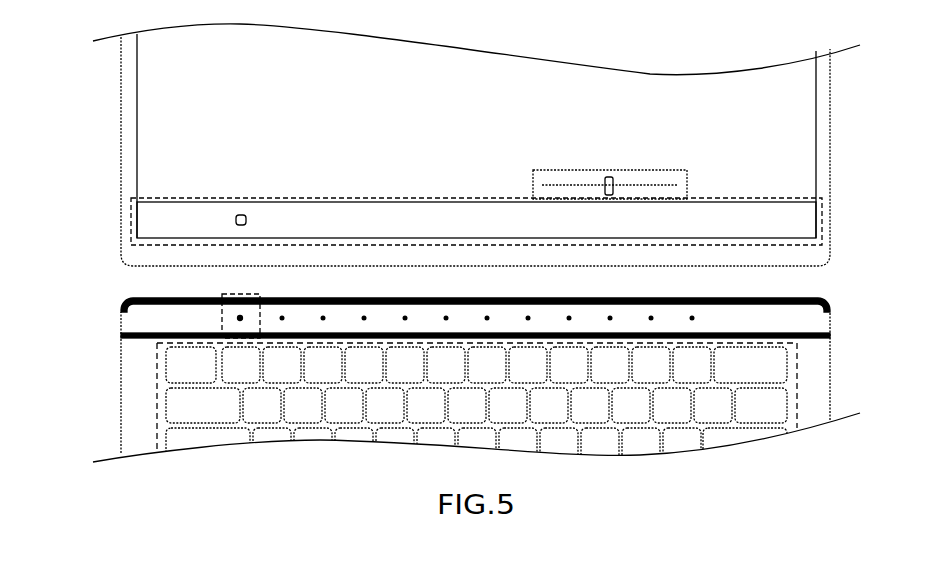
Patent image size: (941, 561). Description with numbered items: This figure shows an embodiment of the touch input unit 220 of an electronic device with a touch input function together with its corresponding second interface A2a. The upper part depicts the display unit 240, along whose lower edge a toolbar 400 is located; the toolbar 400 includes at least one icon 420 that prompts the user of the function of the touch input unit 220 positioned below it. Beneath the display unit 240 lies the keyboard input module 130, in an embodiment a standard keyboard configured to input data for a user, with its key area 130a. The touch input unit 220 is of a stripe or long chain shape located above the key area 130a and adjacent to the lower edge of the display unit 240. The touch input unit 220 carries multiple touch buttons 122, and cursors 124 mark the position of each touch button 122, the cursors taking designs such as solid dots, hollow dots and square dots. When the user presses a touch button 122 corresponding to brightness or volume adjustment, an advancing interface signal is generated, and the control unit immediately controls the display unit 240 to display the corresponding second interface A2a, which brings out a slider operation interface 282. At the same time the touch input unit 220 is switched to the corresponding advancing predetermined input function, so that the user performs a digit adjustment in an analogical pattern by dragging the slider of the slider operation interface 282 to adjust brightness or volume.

The display unit 240 is at (112, 157).
The second interface A2a is at (796, 135).
The toolbar 400 is at (820, 219).
The icon 420 is at (236, 210).
The slider operation interface 282 is at (575, 166).
The touch input unit 220 is at (831, 303).
The touch button 122 is at (239, 303).
The cursor 124 is at (248, 294).
The keyboard input module 130 is at (112, 393).
The key area 130a is at (798, 366).